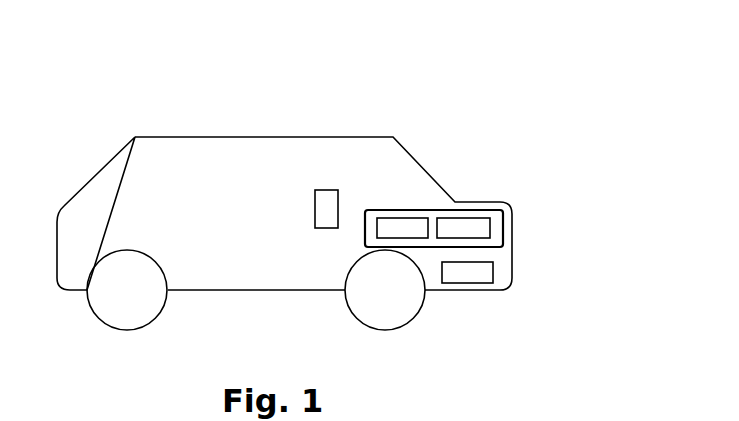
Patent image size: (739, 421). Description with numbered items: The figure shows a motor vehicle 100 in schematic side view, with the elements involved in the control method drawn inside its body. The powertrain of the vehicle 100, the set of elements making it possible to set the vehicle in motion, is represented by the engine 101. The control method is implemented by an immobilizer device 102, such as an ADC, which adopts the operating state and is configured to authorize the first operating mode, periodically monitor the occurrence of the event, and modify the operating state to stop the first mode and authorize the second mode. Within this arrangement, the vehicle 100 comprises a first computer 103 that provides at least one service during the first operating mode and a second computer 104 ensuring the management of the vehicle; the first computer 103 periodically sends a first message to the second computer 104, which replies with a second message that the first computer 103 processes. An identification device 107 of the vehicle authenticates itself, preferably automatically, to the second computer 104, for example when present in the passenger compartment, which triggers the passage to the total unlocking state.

The vehicle 100 is at (186, 126).
The engine 101 is at (478, 276).
The immobilizer device 102 is at (418, 213).
The first computer 103 is at (415, 228).
The second computer 104 is at (477, 222).
The identification device 107 is at (325, 190).